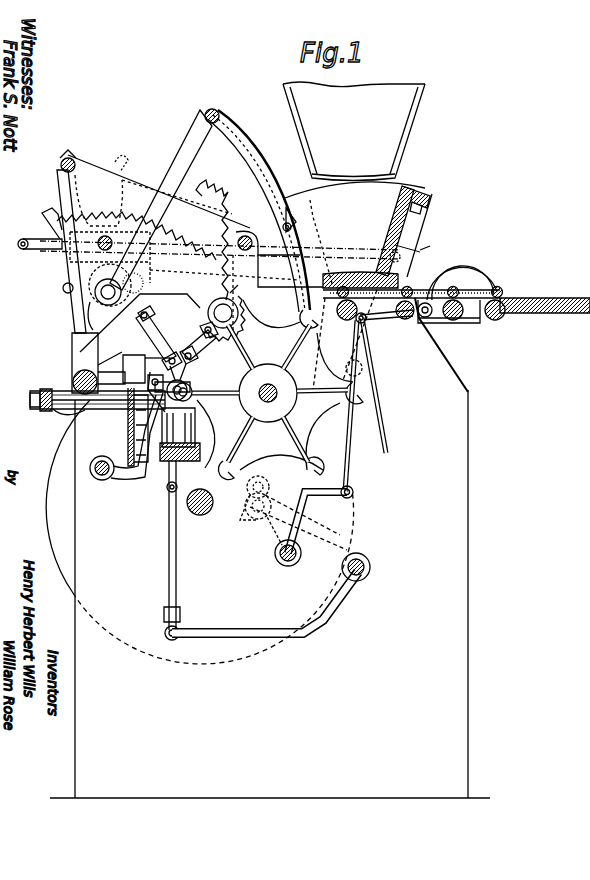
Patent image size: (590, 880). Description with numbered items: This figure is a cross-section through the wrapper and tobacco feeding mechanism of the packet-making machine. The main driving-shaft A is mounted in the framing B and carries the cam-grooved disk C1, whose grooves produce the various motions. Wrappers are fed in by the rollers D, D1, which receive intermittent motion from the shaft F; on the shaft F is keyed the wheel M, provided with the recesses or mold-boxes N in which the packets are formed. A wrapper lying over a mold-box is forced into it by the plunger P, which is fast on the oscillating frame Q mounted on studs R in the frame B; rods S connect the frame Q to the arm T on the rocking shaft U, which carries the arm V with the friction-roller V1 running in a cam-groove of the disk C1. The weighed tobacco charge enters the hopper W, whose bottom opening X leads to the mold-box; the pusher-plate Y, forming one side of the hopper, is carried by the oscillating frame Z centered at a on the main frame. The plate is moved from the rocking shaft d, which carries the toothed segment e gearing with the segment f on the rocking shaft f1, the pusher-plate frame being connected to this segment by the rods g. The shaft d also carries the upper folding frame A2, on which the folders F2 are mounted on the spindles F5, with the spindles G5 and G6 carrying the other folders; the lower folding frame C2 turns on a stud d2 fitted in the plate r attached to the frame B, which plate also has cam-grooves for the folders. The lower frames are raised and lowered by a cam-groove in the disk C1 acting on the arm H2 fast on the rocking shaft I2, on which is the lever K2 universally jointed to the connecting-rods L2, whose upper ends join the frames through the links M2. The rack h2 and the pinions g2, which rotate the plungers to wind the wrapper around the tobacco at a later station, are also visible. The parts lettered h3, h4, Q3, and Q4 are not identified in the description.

The framing B is at (270, 548).
The hopper W is at (354, 147).
The plunger P is at (297, 202).
The pusher-plate Y is at (390, 216).
The oscillating frame Z is at (405, 242).
The rods g is at (40, 249).
The opening X is at (353, 281).
The feeding-rollers D is at (498, 292).
The feeding-rollers D1 is at (350, 318).
The mold-boxes N is at (358, 405).
The center a is at (362, 368).
The oscillating frame Q is at (159, 200).
The rocking shaft f1 is at (72, 158).
The toothed segment f is at (153, 189).
The toothed segment e is at (136, 231).
The rack h2 is at (219, 255).
The stud or short shaft d2 is at (248, 236).
The pin h3 is at (110, 257).
The studs R is at (103, 286).
The link h4 is at (96, 316).
The top oscillating frame A2 is at (216, 382).
The pinions g2 is at (243, 310).
The rods S is at (300, 312).
The shaft F is at (270, 402).
The wheel or plate M is at (266, 390).
The rocking shaft d is at (70, 380).
The spindles F5 is at (110, 351).
The folders F2 is at (85, 354).
The block Q3 is at (138, 368).
The spindles G6 is at (155, 338).
The spindles G5 is at (183, 367).
The plate r is at (125, 440).
The roller arm Q4 is at (104, 480).
The oscillating frame C2 is at (184, 421).
The connecting-rods L2 is at (176, 568).
The links M2 is at (156, 487).
The lever K2 is at (305, 640).
The rocking shaft I2 is at (370, 570).
The arm T is at (315, 500).
The rocking shaft U is at (294, 566).
The arm H2 is at (298, 522).
The arm V is at (261, 515).
The friction-roller V1 is at (239, 531).
The main driving-shaft A is at (208, 512).
The disk C1 is at (199, 532).